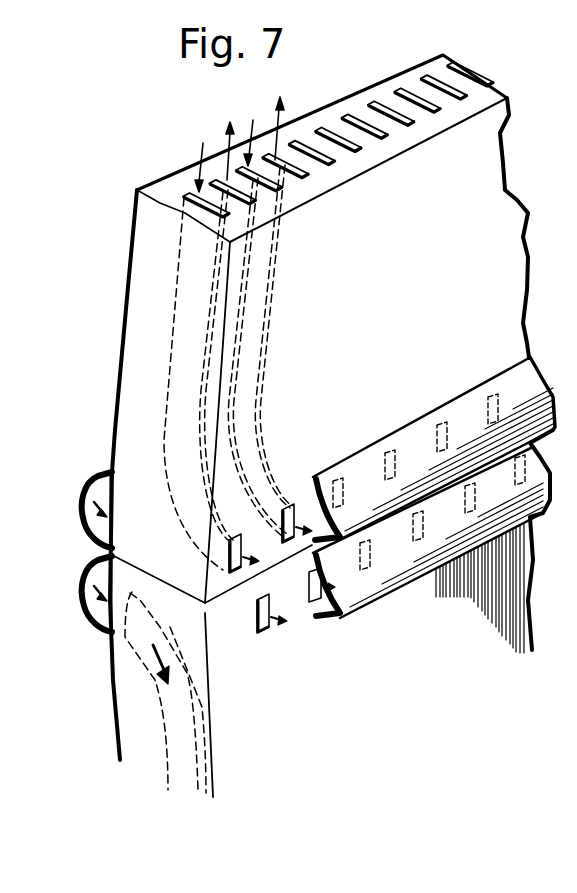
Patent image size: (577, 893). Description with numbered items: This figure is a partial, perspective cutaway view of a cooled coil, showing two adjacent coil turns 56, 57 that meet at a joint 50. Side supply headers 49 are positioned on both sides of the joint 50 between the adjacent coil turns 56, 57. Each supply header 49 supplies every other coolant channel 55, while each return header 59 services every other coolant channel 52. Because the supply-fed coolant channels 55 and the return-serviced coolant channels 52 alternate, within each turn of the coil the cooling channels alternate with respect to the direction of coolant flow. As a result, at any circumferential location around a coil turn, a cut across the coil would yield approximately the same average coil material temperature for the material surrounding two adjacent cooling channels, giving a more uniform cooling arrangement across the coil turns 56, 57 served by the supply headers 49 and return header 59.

The side supply header 49 is at (92, 570).
The joint 50 is at (140, 573).
The coolant channel 52 is at (240, 572).
The coolant channel 55 is at (155, 680).
The coil turn 56 is at (157, 268).
The coil turn 57 is at (137, 753).
The return header 59 is at (383, 500).